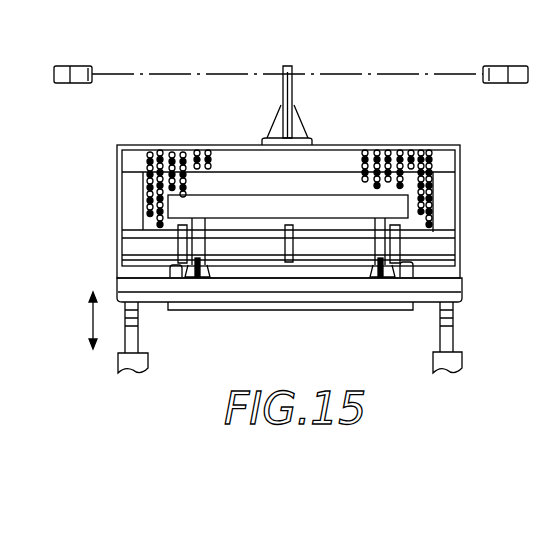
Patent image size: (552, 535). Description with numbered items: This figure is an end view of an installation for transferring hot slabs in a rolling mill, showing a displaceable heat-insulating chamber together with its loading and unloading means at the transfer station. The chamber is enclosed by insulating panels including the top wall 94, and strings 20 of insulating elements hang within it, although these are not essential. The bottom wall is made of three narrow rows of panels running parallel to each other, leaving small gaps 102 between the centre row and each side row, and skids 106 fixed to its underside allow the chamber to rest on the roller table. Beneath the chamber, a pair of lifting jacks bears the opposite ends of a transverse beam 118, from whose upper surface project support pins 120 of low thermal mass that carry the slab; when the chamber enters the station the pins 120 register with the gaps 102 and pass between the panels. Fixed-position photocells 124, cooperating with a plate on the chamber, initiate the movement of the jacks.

The photocells 124 is at (78, 83).
The strings of insulating elements 20 is at (181, 151).
The top wall 94 is at (338, 160).
The support pins 120 is at (325, 207).
The gaps 102 is at (400, 242).
The skids 106 is at (403, 265).
The transverse beam 118 is at (118, 290).